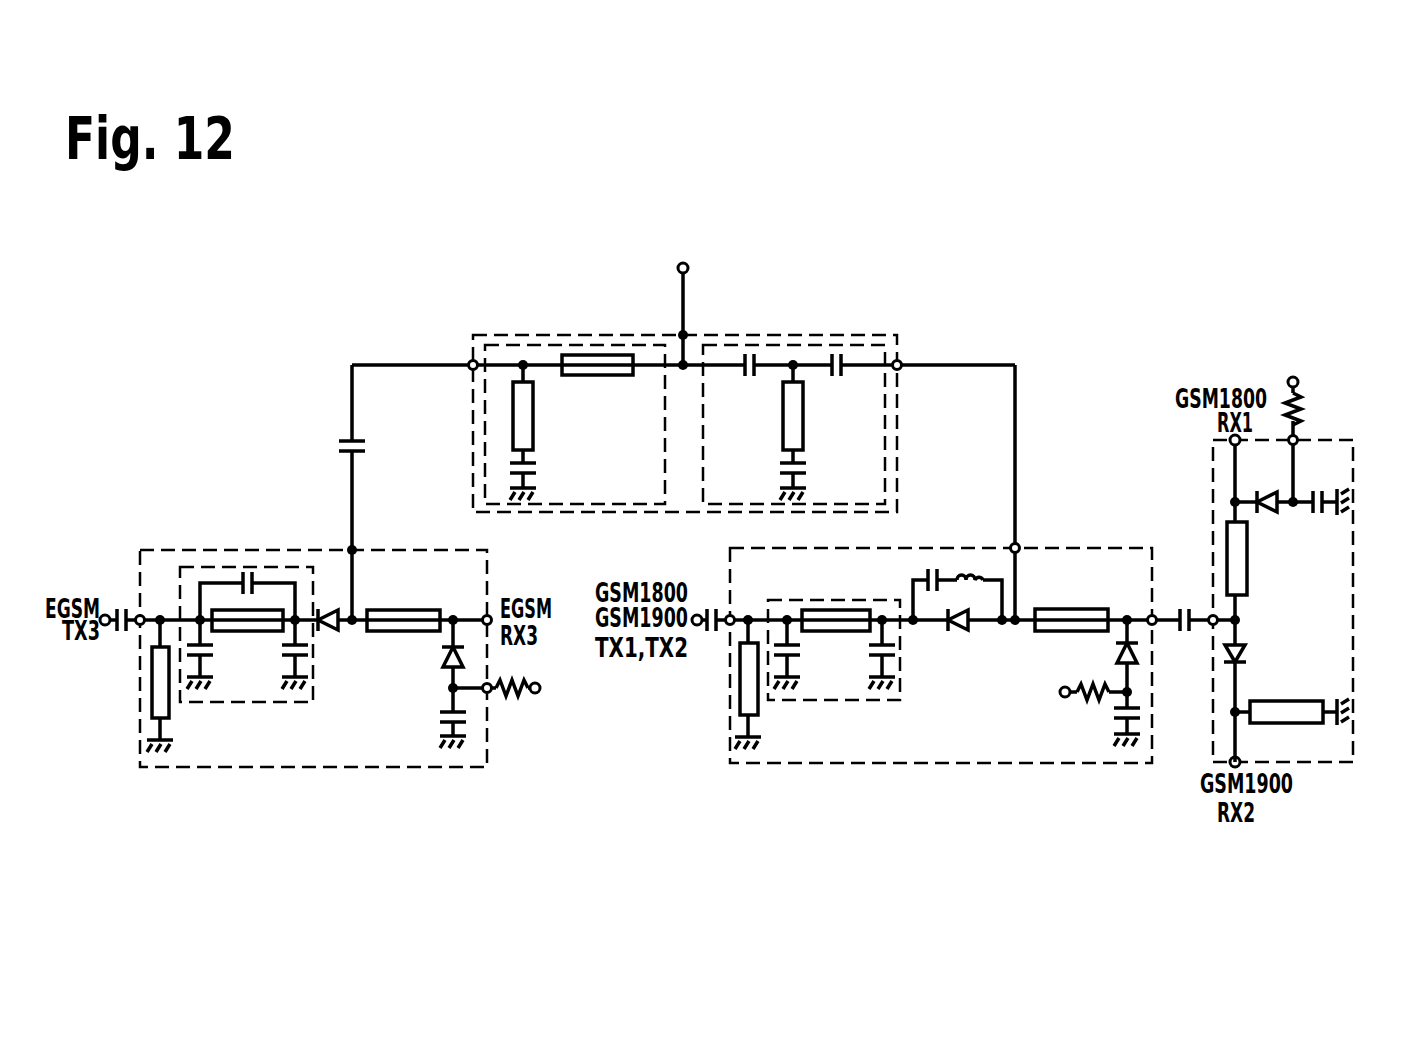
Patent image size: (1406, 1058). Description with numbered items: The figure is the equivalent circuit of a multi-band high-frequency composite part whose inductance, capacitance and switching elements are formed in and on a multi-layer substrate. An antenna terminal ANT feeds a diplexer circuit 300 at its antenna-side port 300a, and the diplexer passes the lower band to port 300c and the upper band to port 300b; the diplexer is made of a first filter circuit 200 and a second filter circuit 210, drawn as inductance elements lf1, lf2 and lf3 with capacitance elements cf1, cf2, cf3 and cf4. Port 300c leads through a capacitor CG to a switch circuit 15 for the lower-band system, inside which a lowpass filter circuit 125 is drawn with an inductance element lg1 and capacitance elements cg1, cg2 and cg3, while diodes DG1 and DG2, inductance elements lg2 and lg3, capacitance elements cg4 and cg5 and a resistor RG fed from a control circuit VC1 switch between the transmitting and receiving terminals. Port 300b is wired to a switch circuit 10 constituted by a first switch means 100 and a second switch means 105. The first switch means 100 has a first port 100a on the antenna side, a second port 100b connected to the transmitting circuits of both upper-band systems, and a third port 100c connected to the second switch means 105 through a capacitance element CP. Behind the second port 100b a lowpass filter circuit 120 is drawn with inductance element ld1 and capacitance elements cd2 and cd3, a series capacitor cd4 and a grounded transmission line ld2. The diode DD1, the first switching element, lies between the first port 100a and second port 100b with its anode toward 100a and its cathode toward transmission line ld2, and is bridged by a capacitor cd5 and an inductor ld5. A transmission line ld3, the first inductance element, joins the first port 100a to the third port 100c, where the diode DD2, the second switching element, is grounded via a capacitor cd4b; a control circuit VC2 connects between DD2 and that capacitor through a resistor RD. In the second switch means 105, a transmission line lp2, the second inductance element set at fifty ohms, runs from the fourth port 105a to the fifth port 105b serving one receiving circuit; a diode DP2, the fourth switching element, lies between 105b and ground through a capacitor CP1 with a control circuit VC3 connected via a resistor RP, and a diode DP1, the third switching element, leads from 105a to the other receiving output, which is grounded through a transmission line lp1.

The antenna terminal ANT is at (682, 299).
The diplexer circuit 300 is at (870, 335).
The antenna-side port of diplexer 300a is at (682, 335).
The high-band port of diplexer 300b is at (899, 368).
The low-band port of diplexer 300c is at (472, 369).
The first filter circuit 200 is at (522, 345).
The second filter circuit 210 is at (781, 345).
The inductor of low-pass filter lf1 is at (620, 377).
The shunt inductor of low-pass filter lf2 is at (533, 432).
The shunt capacitor of low-pass filter cf1 is at (535, 470).
The series capacitor of high-pass filter cf2 is at (750, 378).
The shunt capacitor of high-pass filter cf3 is at (805, 470).
The series capacitor of high-pass filter cf4 is at (836, 378).
The shunt inductor of high-pass filter lf3 is at (803, 432).
The DC blocking capacitor (EGSM side) CG is at (341, 441).
The switch circuit 15 is at (318, 768).
The lowpass filter circuit 125 is at (248, 768).
The shunt capacitor of EGSM filter cg1 is at (282, 650).
The parallel capacitor of EGSM filter cg2 is at (245, 573).
The shunt capacitor of EGSM filter cg3 is at (215, 650).
The capacitor at control terminal VC1 cg4 is at (441, 717).
The DC blocking capacitor at EGSM TX3 cg5 is at (122, 609).
The series inductor of EGSM filter lg1 is at (268, 610).
The shunt inductor at EGSM TX3 lg2 is at (152, 680).
The inductor between DG1 and EGSM RX3 lg3 is at (404, 610).
The EGSM switching diode DG1 is at (332, 632).
The EGSM switching diode DG2 is at (443, 660).
The resistor at control terminal VC1 RG is at (512, 700).
The control voltage terminal 1 VC1 is at (556, 689).
The first switch means 100 is at (985, 764).
The first port 100a is at (1018, 546).
The second port 100b is at (733, 617).
The third port 100c is at (1154, 626).
The lowpass filter circuit 120 is at (835, 764).
The shunt capacitor of filter 120 cd2 is at (872, 652).
The shunt capacitor of filter 120 cd3 is at (803, 652).
The capacitor cd4 is at (714, 606).
The capacitor at control terminal VC2 cd4b is at (1114, 718).
The capacitor in parallel with DD1 cd5 is at (933, 570).
The series inductor of filter 120 ld1 is at (838, 610).
The transmission line ld2 is at (740, 697).
The transmission line ld3 is at (1090, 609).
The inductor in parallel with DD1 ld5 is at (972, 572).
The diode DD1 is at (958, 632).
The diode DD2 is at (1116, 652).
The resistor RD is at (1090, 698).
The control circuit VC2 is at (1046, 693).
The capacitance element CP is at (1184, 632).
The switch circuit 10 is at (1213, 757).
The second switch means 105 is at (1344, 440).
The fourth port 105a is at (1213, 615).
The fifth port 105b is at (1233, 443).
The transmission line lp2 is at (1247, 580).
The transmission line lp1 is at (1305, 701).
The diode DP1 is at (1247, 655).
The diode DP2 is at (1265, 514).
The capacitor CP1 is at (1318, 490).
The resistor RP is at (1305, 405).
The control circuit VC3 is at (1296, 365).